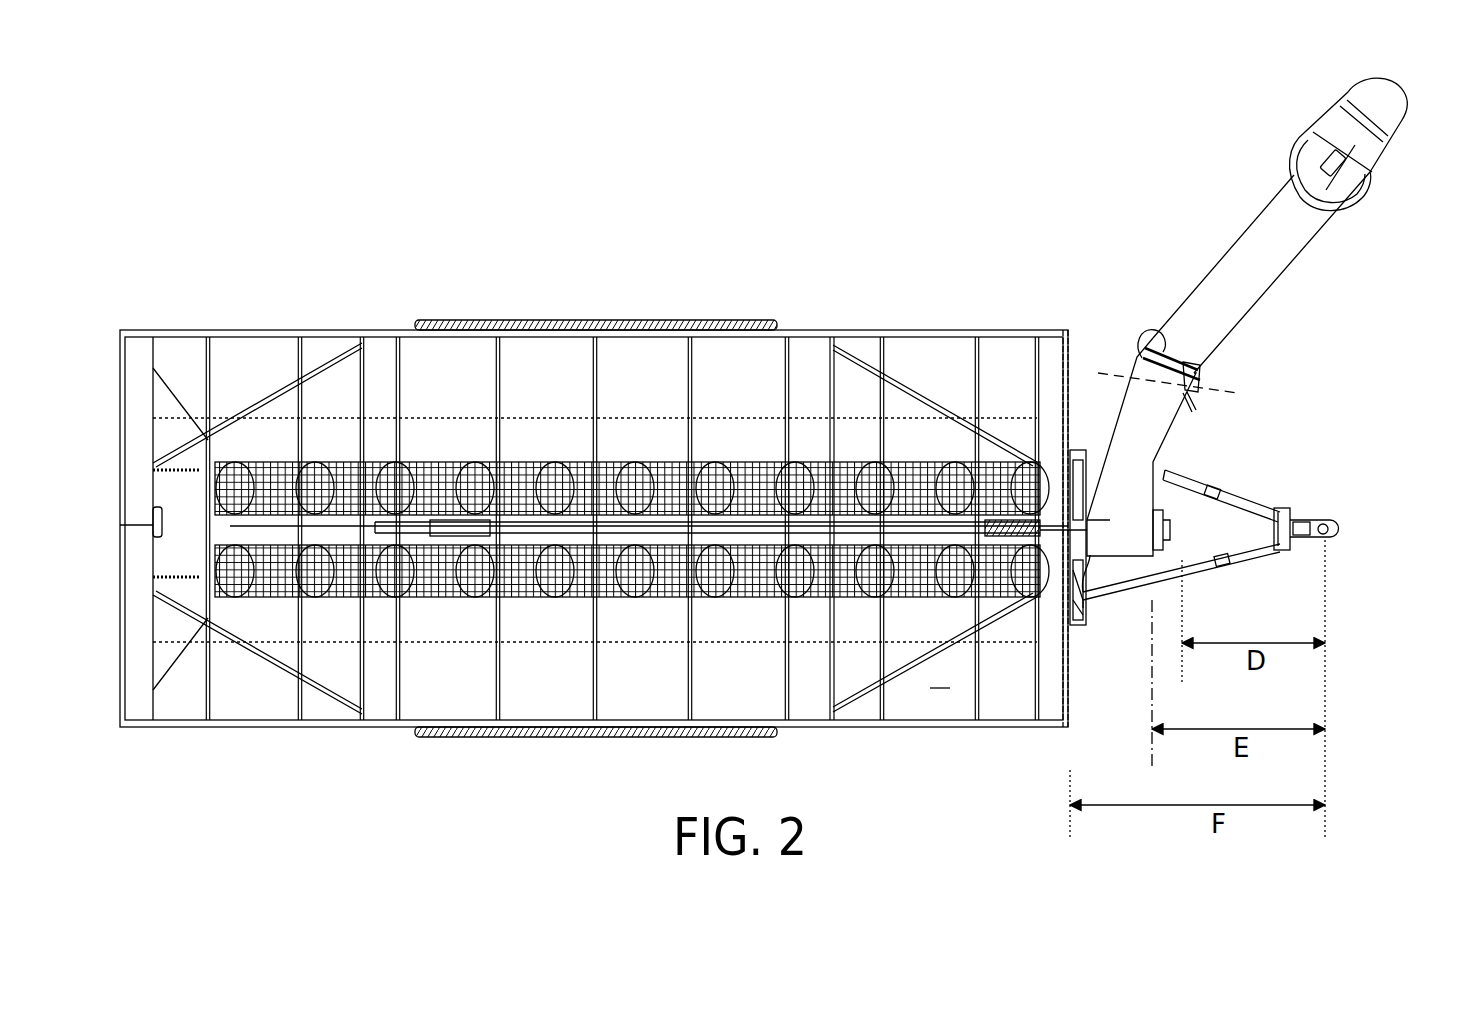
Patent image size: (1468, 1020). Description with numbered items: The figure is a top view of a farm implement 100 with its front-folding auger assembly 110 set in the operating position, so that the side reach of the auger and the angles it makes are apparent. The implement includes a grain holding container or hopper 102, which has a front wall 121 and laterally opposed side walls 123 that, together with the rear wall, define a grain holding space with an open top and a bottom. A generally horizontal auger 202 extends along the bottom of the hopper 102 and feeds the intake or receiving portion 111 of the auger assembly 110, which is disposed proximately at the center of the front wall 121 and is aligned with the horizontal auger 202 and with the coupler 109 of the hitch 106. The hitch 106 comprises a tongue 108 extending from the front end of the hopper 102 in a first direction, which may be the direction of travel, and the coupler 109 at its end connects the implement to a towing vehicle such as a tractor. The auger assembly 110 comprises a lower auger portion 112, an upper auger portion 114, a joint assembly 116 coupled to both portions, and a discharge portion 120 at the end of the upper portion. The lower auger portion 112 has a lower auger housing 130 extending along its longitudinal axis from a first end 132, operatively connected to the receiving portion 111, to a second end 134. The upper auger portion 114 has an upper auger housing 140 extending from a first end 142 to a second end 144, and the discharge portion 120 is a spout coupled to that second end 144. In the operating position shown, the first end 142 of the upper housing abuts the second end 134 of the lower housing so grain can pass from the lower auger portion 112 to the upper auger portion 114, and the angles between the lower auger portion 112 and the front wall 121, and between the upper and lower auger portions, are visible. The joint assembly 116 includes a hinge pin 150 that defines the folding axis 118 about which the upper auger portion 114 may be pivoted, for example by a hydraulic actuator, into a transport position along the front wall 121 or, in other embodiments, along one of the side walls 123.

The farm implement 100 is at (597, 198).
The grain holding container or hopper 102 is at (121, 322).
The hitch 106 is at (1302, 508).
The tongue 108 is at (1227, 562).
The coupler 109 is at (1333, 535).
The front-folding auger assembly 110 is at (1157, 147).
The intake or receiving portion 111 is at (1112, 447).
The lower auger portion 112 is at (1184, 444).
The upper auger portion 114 is at (1245, 214).
The joint assembly 116 is at (1122, 363).
The folding axis 118 is at (1227, 393).
The discharge portion 120 is at (1393, 127).
The front wall 121 is at (1067, 348).
The side walls 123 is at (336, 330).
The lower auger housing 130 is at (1128, 428).
The first end 132 is at (1178, 490).
The second end 134 is at (1190, 400).
The upper auger housing 140 is at (1262, 270).
The first end 142 is at (1143, 337).
The second end 144 is at (1310, 213).
The hinge pin 150 is at (1197, 373).
The horizontal auger 202 is at (290, 523).